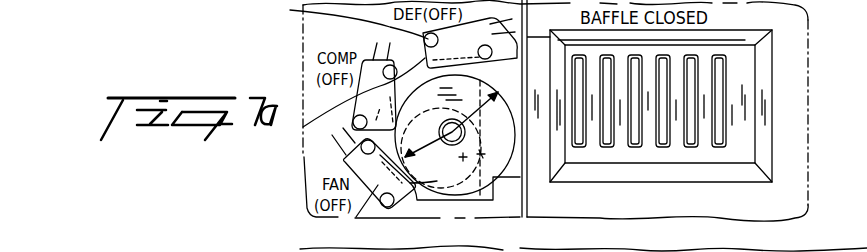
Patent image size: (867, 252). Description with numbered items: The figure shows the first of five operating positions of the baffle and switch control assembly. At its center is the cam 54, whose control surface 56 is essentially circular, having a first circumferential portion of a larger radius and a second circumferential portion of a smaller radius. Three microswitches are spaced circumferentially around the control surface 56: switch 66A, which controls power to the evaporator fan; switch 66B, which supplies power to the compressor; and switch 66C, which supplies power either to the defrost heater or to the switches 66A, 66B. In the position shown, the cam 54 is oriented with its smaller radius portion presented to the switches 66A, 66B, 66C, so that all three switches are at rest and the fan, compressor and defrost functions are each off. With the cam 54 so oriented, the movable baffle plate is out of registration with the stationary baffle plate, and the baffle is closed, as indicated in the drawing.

The cam 54 is at (497, 157).
The control surface 56 is at (448, 200).
The switch 66A is at (352, 220).
The switch 66B is at (310, 121).
The switch 66C is at (306, 13).